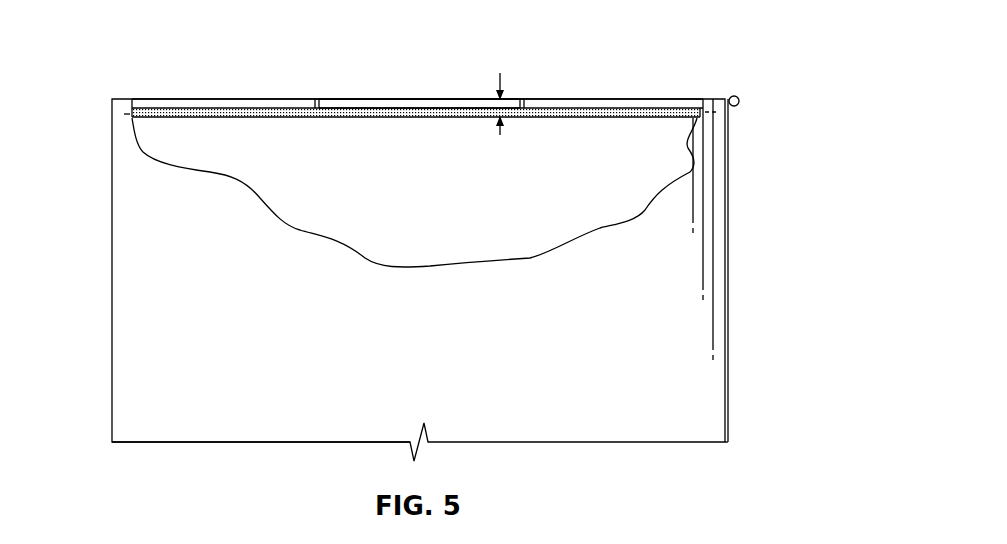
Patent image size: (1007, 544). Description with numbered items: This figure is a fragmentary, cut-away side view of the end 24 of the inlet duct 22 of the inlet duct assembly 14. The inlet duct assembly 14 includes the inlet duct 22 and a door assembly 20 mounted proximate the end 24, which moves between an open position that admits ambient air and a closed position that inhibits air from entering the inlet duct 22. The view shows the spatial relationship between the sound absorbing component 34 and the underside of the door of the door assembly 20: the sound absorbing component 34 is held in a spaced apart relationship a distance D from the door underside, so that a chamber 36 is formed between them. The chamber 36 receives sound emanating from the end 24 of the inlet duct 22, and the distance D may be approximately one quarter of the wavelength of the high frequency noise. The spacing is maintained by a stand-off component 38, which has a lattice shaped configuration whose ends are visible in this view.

The inlet duct assembly 14 is at (740, 365).
The door assembly 20 is at (358, 97).
The inlet duct 22 is at (110, 420).
The end 24 is at (128, 132).
The sound absorbing component 34 is at (343, 122).
The chamber 36 is at (449, 106).
The stand-off component 38 is at (312, 104).
The distance D is at (502, 76).